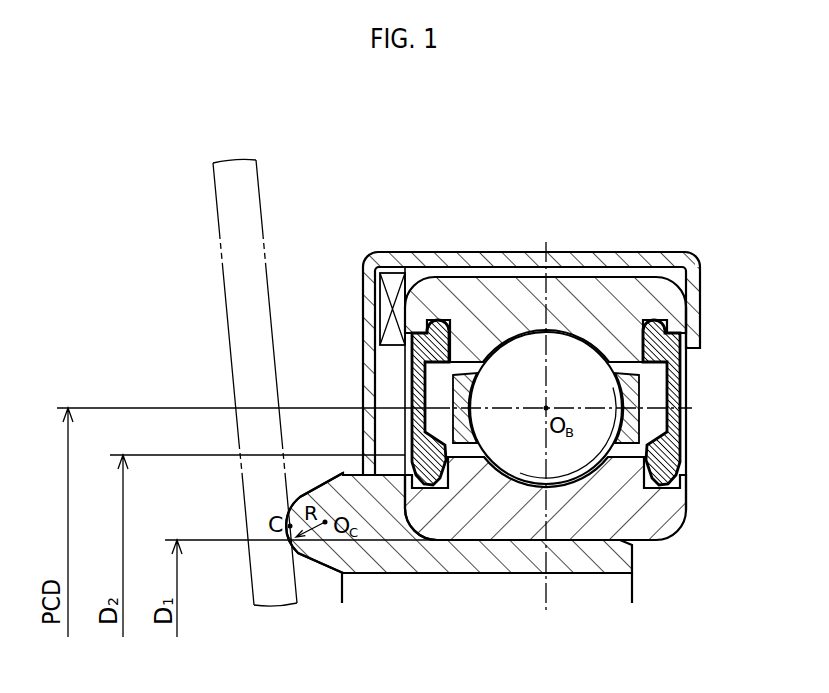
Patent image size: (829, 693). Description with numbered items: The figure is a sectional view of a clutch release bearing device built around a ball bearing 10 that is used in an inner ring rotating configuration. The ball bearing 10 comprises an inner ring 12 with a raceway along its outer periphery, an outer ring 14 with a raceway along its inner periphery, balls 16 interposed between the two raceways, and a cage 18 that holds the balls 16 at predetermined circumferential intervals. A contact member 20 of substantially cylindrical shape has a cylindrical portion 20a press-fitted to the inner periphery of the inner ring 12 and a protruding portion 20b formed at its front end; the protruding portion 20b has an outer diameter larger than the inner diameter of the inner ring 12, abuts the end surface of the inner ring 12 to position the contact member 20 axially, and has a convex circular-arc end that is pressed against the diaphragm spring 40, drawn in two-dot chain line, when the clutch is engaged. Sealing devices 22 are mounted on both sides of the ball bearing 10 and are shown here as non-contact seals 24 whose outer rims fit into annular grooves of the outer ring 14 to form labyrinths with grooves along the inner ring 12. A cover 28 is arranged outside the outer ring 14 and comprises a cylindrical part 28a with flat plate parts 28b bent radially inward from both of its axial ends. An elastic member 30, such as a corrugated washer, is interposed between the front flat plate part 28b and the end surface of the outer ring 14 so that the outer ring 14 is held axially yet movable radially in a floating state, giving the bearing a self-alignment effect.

The ball bearing 10 is at (733, 522).
The inner ring 12 is at (588, 522).
The outer ring 14 is at (592, 293).
The balls 16 is at (512, 363).
The cage 18 is at (632, 393).
The contact member 20 is at (448, 563).
The cylindrical portion 20a is at (513, 563).
The protruding portion 20b is at (323, 550).
The sealing devices 22 is at (718, 430).
The non-contact seals 24 is at (412, 382).
The cover 28 is at (640, 252).
The cylindrical part 28a is at (516, 252).
The flat plate parts 28b is at (370, 307).
The elastic member 30 is at (393, 282).
The diaphragm spring 40 is at (223, 282).